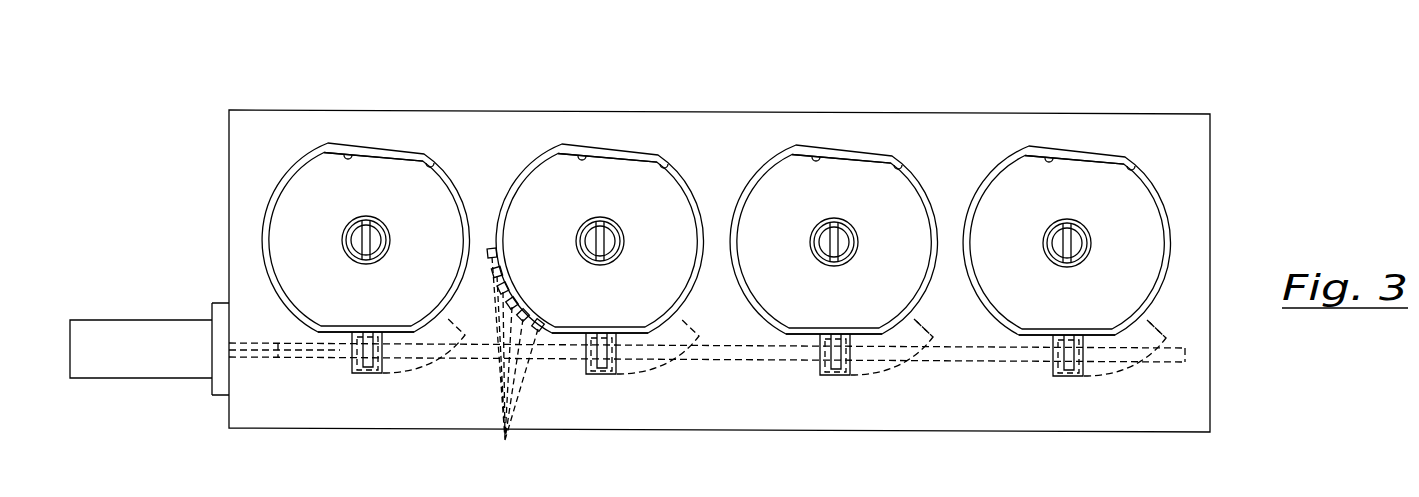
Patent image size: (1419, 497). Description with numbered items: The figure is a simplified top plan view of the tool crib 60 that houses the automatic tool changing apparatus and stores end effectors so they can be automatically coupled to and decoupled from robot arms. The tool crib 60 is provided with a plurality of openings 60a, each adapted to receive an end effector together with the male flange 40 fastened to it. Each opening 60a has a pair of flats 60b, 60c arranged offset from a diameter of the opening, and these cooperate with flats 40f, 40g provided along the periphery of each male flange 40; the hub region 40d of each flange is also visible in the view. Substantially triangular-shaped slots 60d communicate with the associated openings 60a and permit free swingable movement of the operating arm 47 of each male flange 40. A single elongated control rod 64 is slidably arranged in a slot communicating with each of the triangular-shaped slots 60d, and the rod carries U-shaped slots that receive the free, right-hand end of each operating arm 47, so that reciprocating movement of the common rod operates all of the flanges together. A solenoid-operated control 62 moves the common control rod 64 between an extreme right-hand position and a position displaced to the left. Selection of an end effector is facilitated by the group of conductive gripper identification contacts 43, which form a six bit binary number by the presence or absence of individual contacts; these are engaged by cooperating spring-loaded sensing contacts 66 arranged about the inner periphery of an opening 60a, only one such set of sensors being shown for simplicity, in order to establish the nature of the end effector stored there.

The male flange 40 is at (1130, 284).
The hub of disc 40d is at (344, 238).
The flat 40f is at (848, 157).
The flat 40g is at (878, 343).
The conductive gripper identification contacts 43 is at (541, 324).
The operating arm 47 is at (368, 368).
The tool crib 60 is at (296, 412).
The opening 60a is at (433, 160).
The flat 60b is at (343, 150).
The flat 60c is at (345, 330).
The triangular-shaped slot 60d is at (412, 370).
The solenoid-operated control 62 is at (176, 320).
The control rod 64 is at (333, 352).
The sensing contacts 66 is at (515, 365).